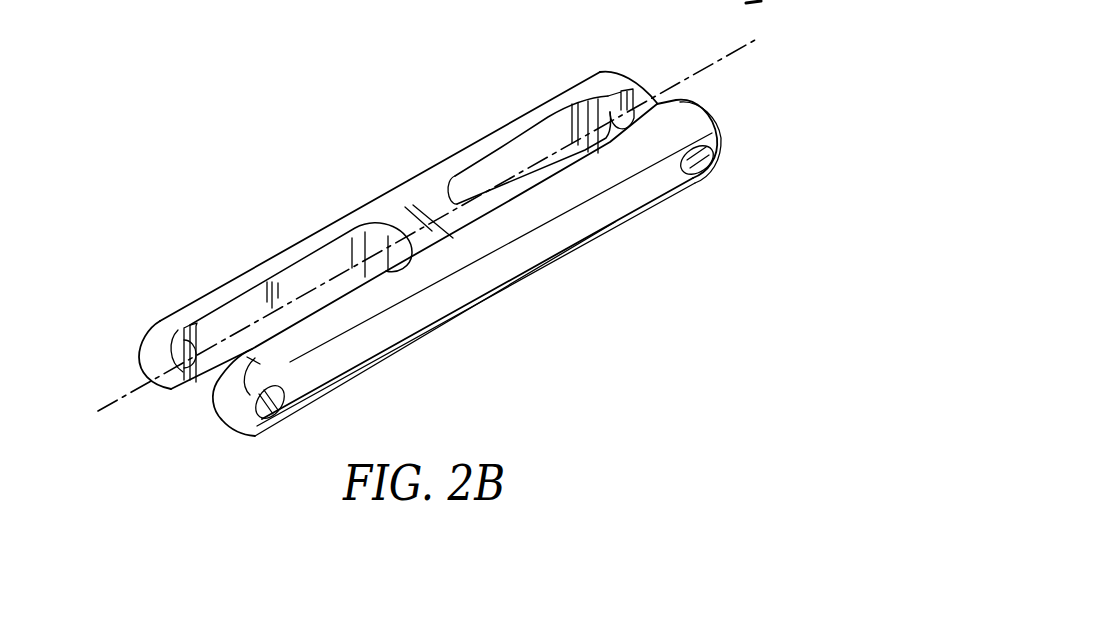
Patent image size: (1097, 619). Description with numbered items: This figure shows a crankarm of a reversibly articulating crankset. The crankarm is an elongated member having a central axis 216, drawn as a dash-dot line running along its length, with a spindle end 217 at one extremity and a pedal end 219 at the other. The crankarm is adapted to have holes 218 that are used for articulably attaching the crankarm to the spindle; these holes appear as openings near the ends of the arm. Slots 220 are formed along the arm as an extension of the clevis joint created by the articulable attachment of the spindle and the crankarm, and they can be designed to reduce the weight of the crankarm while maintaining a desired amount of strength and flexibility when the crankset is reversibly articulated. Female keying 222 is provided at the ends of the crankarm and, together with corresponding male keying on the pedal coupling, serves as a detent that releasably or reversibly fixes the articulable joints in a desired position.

The central axis 216 is at (122, 400).
The spindle end 217 is at (157, 333).
The holes 218 is at (283, 412).
The pedal end 219 is at (684, 124).
The slots 220 is at (320, 265).
The female keying 222 is at (190, 384).